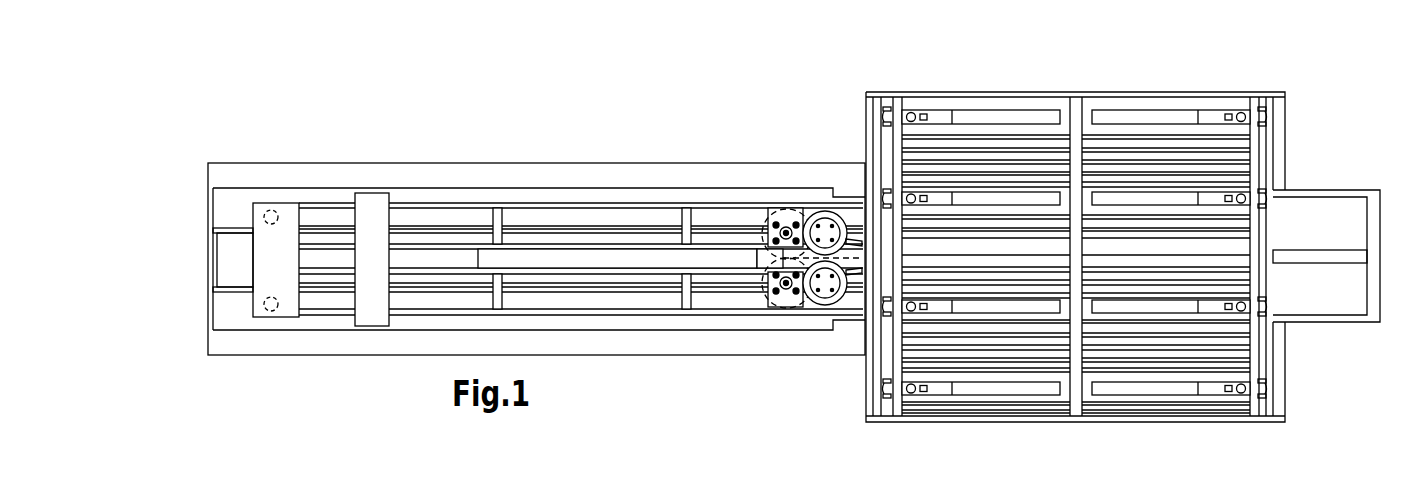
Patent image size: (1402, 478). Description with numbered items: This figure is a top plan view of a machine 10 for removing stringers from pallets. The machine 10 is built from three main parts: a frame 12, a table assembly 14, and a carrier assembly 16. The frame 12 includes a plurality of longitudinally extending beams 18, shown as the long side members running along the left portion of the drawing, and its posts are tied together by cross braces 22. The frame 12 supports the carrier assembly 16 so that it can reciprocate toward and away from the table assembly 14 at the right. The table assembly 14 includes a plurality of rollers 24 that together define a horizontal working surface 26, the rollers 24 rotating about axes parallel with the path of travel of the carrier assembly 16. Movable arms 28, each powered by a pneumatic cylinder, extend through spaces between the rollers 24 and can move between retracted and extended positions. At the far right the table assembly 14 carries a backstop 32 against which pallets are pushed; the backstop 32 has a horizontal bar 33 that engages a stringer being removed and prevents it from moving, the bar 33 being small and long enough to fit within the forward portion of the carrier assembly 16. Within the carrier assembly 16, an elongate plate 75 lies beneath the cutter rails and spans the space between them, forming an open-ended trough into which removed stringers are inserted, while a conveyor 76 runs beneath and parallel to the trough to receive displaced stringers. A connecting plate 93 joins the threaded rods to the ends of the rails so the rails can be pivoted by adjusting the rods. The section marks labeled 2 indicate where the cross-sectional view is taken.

The section line 2- 2 is at (860, 173).
The machine for removing stringers 10 is at (892, 69).
The frame 12 is at (462, 148).
The table assembly 14 is at (1087, 73).
The carrier assembly 16 is at (624, 186).
The longitudinally extending beams 18 is at (537, 174).
The cross braces 22 is at (1278, 130).
The rollers 24 is at (1245, 360).
The horizontal working surface 26 is at (1190, 131).
The movable arms 28 is at (998, 117).
The backstop 32 is at (1322, 193).
The horizontal bar 33 is at (1300, 255).
The elongate plate 75 is at (630, 258).
The conveyor 76 is at (233, 260).
The connecting plate 93 is at (275, 272).